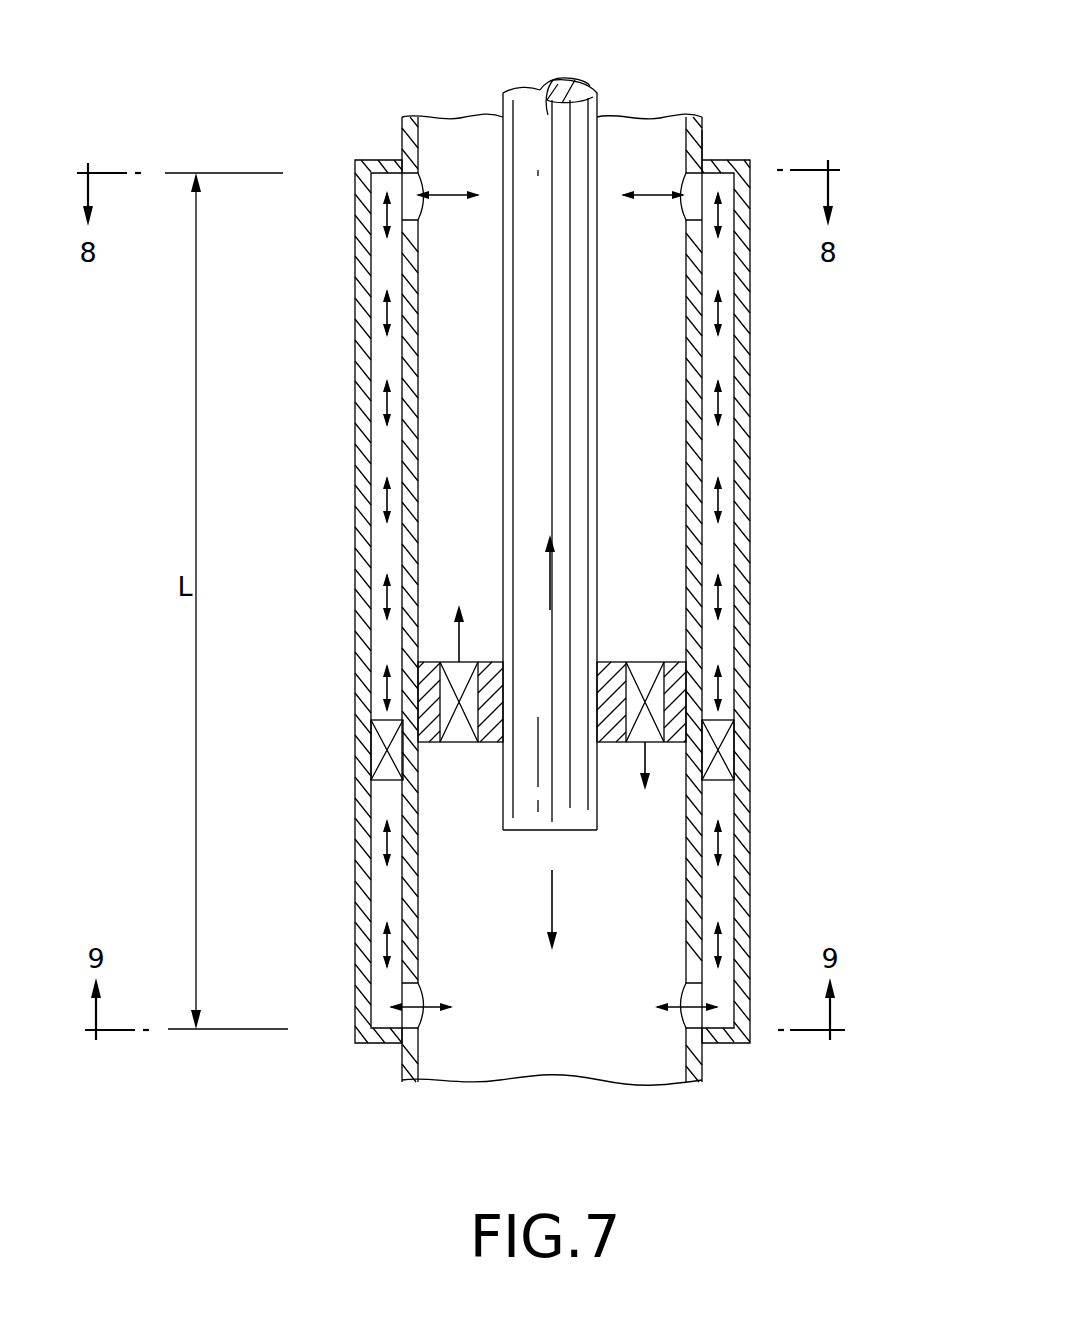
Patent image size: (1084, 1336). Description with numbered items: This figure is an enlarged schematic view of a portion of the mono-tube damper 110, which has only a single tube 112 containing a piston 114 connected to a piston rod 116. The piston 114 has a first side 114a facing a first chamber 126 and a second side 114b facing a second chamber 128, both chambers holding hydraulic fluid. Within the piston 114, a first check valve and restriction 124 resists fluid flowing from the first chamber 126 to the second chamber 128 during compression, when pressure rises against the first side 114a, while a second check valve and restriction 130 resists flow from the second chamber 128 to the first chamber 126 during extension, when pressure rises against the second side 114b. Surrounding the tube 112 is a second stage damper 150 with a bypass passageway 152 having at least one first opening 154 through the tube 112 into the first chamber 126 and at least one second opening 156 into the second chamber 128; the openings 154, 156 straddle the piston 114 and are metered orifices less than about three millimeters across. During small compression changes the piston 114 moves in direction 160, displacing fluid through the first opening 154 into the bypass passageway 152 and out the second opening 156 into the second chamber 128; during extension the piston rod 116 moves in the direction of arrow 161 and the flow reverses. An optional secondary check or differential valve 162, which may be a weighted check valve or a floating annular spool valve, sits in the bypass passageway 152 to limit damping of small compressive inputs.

The mono-tube damper 110 is at (716, 117).
The single tube 112 is at (704, 140).
The piston 114 is at (572, 724).
The first side 114a is at (432, 746).
The second side 114b is at (672, 662).
The piston rod 116 is at (548, 127).
The first check valve and restriction 124 is at (450, 697).
The first chamber 126 is at (602, 899).
The second chamber 128 is at (620, 454).
The second check valve and restriction 130 is at (643, 660).
The second stage damper 150 is at (760, 498).
The bypass passageway 152 is at (716, 280).
The first opening 154 is at (420, 1018).
The second opening 156 is at (413, 188).
The direction 160 is at (548, 900).
The arrow 161 is at (550, 586).
The secondary check or differential valve 162 is at (385, 748).